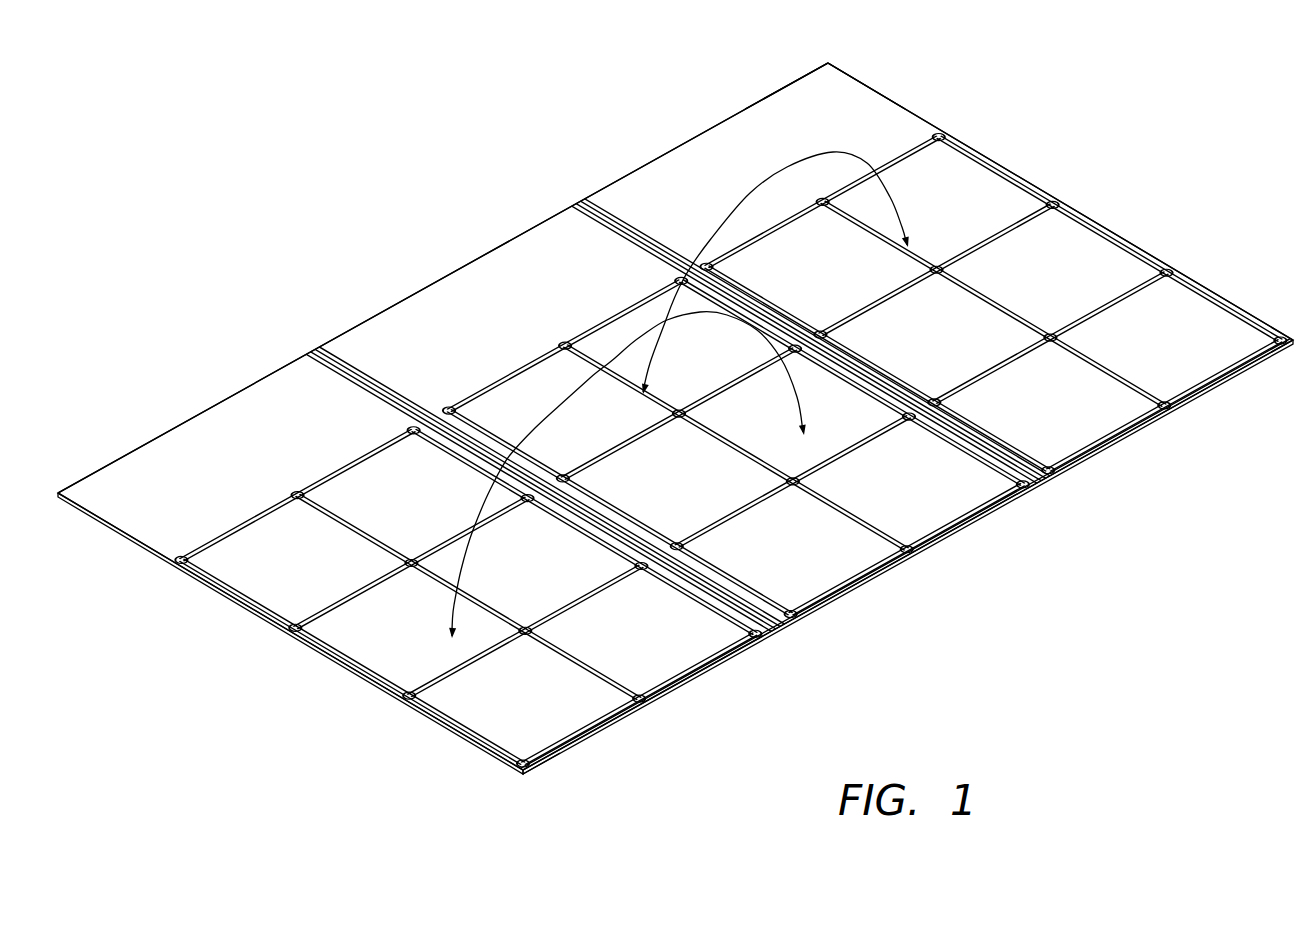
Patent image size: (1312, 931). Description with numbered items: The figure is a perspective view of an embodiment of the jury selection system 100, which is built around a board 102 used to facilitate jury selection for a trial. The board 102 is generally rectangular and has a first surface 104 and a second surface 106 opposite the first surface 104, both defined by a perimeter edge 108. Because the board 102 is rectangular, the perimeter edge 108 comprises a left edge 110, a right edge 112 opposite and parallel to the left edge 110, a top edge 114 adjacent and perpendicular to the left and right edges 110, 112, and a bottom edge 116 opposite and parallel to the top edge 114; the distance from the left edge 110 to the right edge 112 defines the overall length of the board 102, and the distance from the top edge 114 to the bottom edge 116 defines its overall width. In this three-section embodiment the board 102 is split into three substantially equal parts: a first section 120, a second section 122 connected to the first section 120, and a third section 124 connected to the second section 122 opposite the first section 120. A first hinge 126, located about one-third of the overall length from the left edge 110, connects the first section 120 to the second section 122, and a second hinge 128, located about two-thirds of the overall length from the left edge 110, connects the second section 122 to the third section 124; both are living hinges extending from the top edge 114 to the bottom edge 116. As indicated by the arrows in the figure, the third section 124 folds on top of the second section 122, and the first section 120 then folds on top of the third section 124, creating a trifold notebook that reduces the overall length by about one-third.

The jury selection system 100 is at (268, 240).
The board 102 is at (883, 93).
The first surface 104 is at (675, 416).
The second surface 106 is at (87, 520).
The perimeter edge 108 is at (548, 775).
The left edge 110 is at (290, 631).
The right edge 112 is at (1060, 201).
The top edge 114 is at (443, 278).
The bottom edge 116 is at (906, 554).
The first section 120 is at (297, 495).
The second section 122 is at (565, 346).
The third section 124 is at (823, 202).
The first hinge 126 is at (545, 489).
The second hinge 128 is at (811, 341).